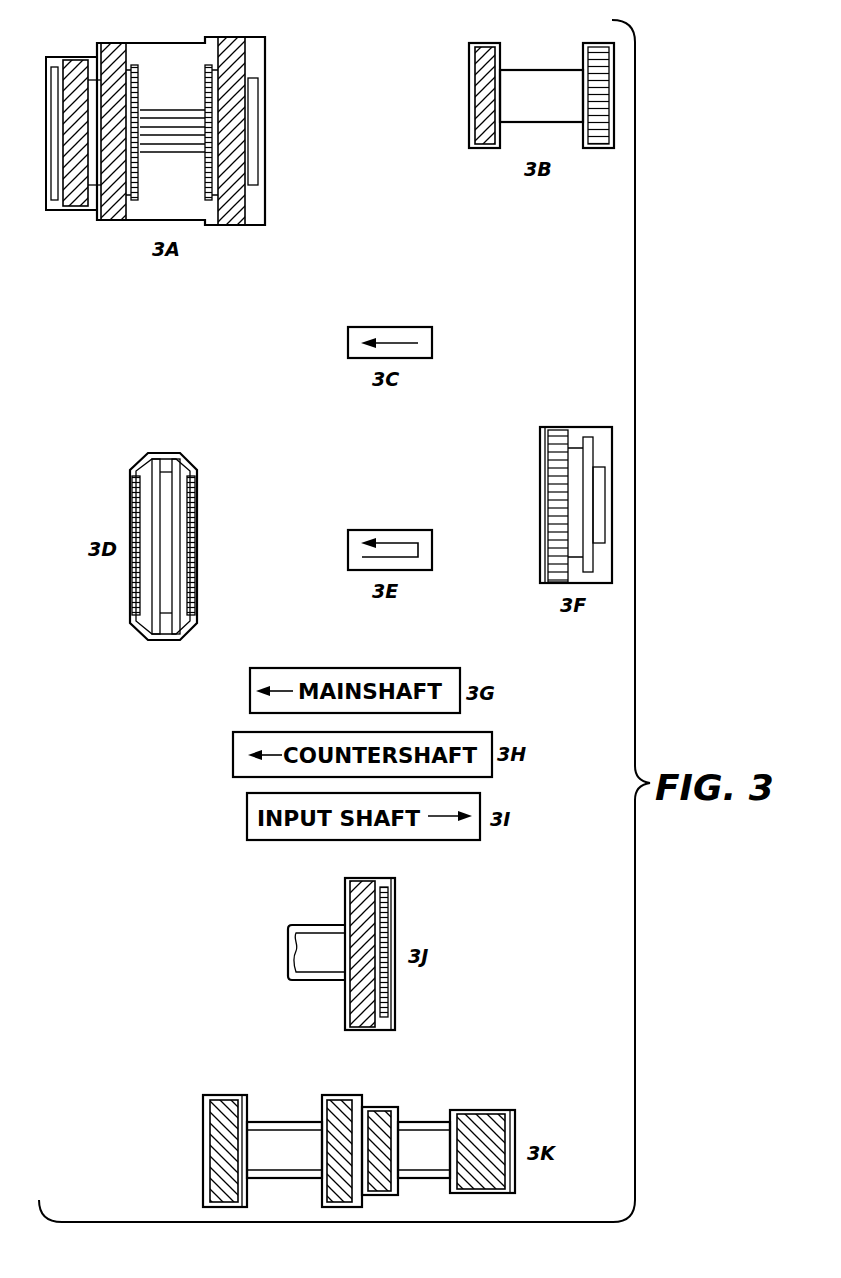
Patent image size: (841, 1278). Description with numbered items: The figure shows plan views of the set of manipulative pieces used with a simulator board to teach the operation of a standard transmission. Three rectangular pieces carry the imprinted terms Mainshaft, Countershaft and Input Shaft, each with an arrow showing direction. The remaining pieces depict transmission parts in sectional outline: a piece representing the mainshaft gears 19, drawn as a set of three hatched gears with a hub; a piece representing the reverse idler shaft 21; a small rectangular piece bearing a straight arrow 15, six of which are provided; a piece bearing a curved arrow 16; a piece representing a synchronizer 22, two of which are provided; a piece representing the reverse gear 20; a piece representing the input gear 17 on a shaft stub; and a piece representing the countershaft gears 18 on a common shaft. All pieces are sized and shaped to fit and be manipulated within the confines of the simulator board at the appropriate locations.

In FIG. 3C, the straight arrow 15 is at (397, 326).
In FIG. 3E, the curved arrow 16 is at (407, 530).
In FIG. 3J, the input gear 17 is at (302, 925).
In FIG. 3K, the countershaft gears 18 is at (203, 1118).
In FIG. 3A, the mainshaft gears 19 is at (263, 62).
In FIG. 3F, the reverse gear 20 is at (570, 427).
In FIG. 3B, the reverse idler shaft 21 is at (535, 69).
In FIG. 3D, the synchronizers 22 is at (168, 452).